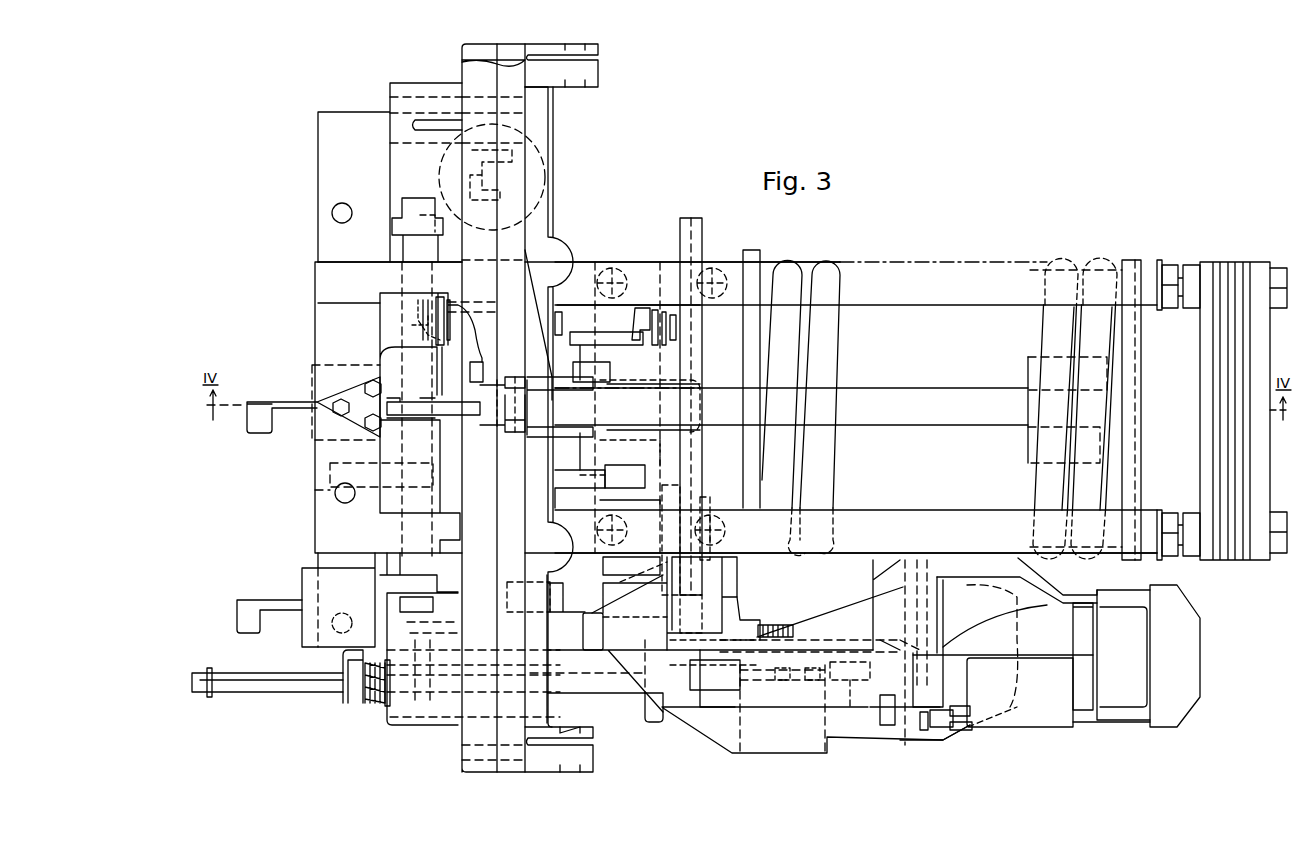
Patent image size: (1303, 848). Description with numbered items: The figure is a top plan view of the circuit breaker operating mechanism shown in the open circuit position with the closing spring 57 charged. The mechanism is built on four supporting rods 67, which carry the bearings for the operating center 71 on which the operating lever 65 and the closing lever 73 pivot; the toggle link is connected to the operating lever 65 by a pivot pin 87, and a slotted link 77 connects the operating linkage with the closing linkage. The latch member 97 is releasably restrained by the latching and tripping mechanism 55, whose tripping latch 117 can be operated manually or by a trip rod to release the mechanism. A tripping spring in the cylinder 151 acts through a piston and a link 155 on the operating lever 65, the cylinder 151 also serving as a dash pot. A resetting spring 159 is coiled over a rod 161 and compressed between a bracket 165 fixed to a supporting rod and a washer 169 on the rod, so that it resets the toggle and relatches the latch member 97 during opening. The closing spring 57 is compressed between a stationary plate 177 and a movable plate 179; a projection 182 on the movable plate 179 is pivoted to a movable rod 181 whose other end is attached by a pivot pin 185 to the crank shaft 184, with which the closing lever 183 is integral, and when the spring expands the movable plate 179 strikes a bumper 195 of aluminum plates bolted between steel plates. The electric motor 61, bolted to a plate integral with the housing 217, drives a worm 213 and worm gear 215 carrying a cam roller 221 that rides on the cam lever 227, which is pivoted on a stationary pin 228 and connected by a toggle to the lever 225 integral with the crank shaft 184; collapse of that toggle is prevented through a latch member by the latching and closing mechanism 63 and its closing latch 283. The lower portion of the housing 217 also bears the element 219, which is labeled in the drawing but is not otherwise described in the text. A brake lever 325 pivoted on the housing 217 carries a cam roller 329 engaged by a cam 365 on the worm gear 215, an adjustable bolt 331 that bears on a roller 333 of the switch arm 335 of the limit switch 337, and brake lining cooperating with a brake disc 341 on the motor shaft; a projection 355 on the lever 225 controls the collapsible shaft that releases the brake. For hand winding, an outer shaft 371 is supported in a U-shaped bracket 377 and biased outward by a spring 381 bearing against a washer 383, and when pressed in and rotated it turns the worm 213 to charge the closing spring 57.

The latching and tripping mechanism 55 is at (297, 433).
The closing spring 57 is at (843, 352).
The electric motor 61 is at (1183, 653).
The latching and closing mechanism 63 is at (289, 626).
The operating lever 65 is at (548, 102).
The supporting rods 67 is at (940, 305).
The operating center 71 is at (400, 447).
The closing lever 73 is at (385, 490).
The slotted link 77 is at (605, 470).
The pivot pin 87 is at (515, 375).
The latch member 97 is at (420, 400).
The tripping latch 117 is at (262, 402).
The cylinder 151 is at (555, 131).
The link 155 is at (555, 166).
The resetting spring 159 is at (442, 300).
The rod 161 is at (580, 316).
The bracket 165 is at (660, 347).
The washer 169 is at (428, 300).
The stationary plate 177 is at (748, 346).
The movable plate 179 is at (1138, 425).
The movable rod 181 is at (938, 390).
The projection 182 is at (1028, 368).
The closing lever 183 is at (625, 476).
The crank shaft 184 is at (666, 453).
The pivot pin 185 is at (612, 404).
The bumper 195 is at (1248, 252).
The worm 213 is at (785, 627).
The worm gear 215 is at (833, 640).
The housing 217 is at (705, 735).
The cover 219 is at (748, 735).
The cam roller 221 is at (740, 620).
The lever 225 is at (575, 605).
The cam lever 227 is at (668, 622).
The pin 228 is at (703, 505).
The closing latch 283 is at (258, 600).
The brake lever 325 is at (888, 725).
The cam roller 329 is at (838, 688).
The adjustable bolt 331 is at (925, 730).
The roller 333 is at (960, 716).
The switch arm 335 is at (955, 702).
The limit switch 337 is at (1054, 683).
The brake disc 341 is at (905, 600).
The projection 355 is at (645, 710).
The cam 365 is at (788, 690).
The outer shaft 371 is at (278, 676).
The U-shaped bracket 377 is at (343, 700).
The spring 381 is at (383, 710).
The washer 383 is at (368, 707).